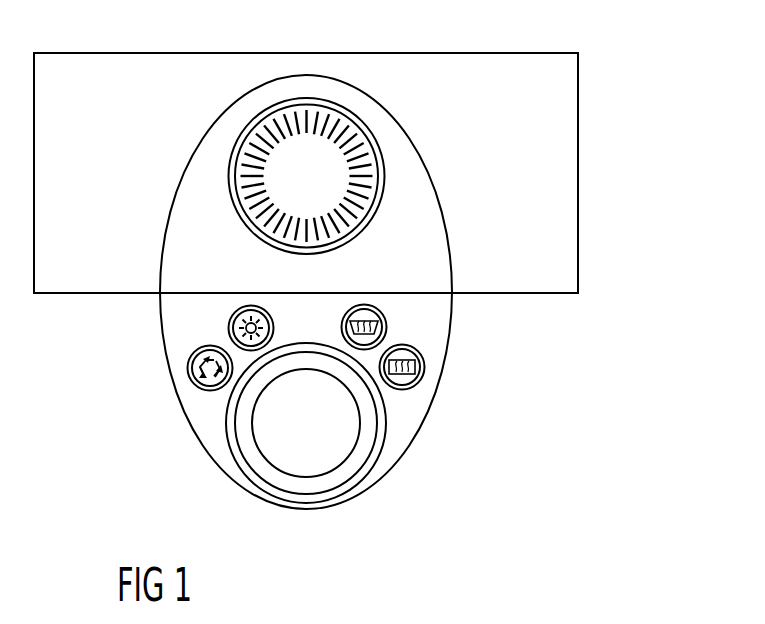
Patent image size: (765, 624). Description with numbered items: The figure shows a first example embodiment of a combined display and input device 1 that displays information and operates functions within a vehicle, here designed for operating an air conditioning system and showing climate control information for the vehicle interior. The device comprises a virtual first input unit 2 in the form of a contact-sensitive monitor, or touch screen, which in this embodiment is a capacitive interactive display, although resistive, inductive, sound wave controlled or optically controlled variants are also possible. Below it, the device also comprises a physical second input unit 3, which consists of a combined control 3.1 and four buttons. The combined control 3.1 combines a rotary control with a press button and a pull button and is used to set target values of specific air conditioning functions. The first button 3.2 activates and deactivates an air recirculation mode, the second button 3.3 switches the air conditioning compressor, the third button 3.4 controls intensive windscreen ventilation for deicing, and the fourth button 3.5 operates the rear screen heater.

The combined display and input device 1 is at (42, 28).
The virtual first input unit 2 is at (548, 137).
The physical second input unit 3 is at (213, 427).
The combined control 3.1 is at (333, 442).
The first button 3.2 is at (187, 369).
The second button 3.3 is at (229, 331).
The third button 3.4 is at (387, 330).
The fourth button 3.5 is at (424, 369).